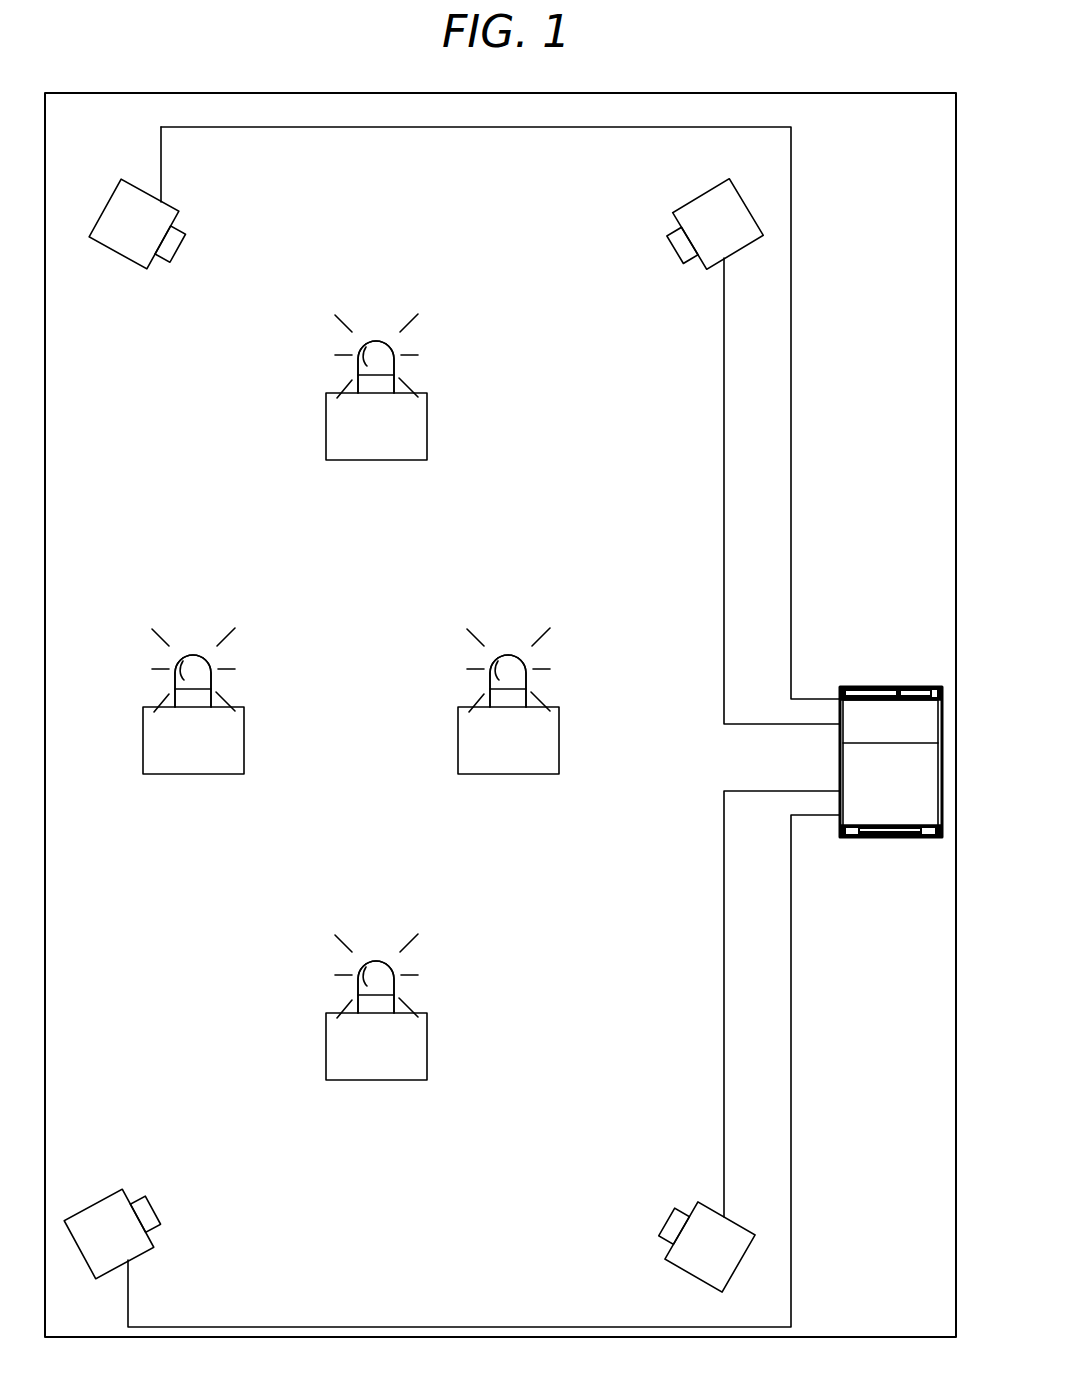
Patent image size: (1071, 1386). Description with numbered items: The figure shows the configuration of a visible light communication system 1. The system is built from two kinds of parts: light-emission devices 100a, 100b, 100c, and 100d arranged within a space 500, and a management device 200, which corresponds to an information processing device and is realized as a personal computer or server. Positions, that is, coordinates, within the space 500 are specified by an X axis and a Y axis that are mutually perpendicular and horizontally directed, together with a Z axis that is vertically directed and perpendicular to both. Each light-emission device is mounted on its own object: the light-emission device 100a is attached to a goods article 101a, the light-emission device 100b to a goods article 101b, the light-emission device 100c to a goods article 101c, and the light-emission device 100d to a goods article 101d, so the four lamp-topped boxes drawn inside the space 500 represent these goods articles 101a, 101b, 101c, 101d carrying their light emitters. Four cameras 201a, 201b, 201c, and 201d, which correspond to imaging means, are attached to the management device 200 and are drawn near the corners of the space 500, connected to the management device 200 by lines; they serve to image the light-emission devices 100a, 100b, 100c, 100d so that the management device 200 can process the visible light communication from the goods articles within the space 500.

The visible light communication system 1 is at (812, 220).
The space 500 is at (854, 93).
The light-emission device 100a is at (362, 348).
The light-emission device 100b is at (494, 662).
The light-emission device 100c is at (179, 662).
The light-emission device 100d is at (362, 969).
The goods article 101a is at (327, 418).
The goods article 101b is at (459, 732).
The goods article 101c is at (144, 732).
The goods article 101d is at (327, 1038).
The management device 200 is at (873, 687).
The camera 201a is at (722, 183).
The camera 201b is at (130, 150).
The camera 201c is at (120, 1192).
The camera 201d is at (698, 1202).